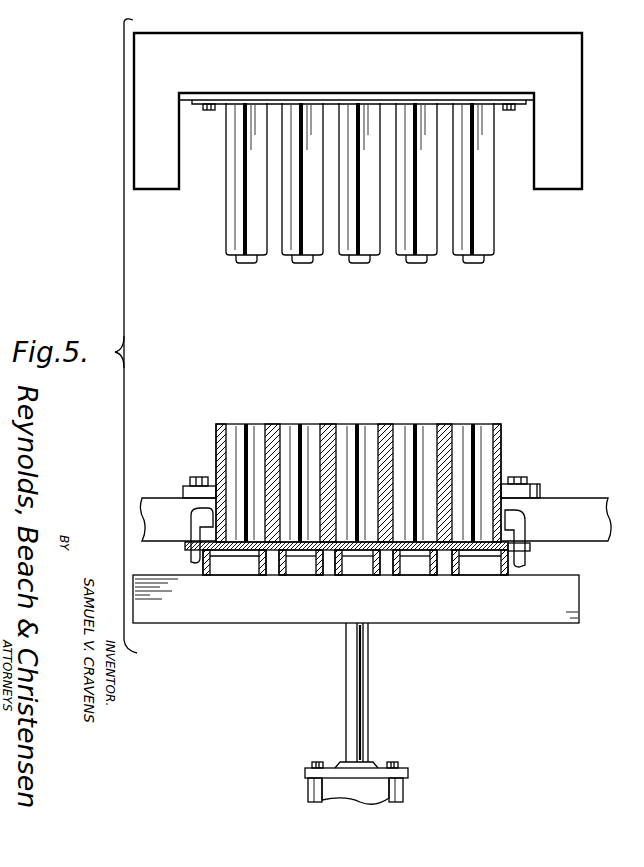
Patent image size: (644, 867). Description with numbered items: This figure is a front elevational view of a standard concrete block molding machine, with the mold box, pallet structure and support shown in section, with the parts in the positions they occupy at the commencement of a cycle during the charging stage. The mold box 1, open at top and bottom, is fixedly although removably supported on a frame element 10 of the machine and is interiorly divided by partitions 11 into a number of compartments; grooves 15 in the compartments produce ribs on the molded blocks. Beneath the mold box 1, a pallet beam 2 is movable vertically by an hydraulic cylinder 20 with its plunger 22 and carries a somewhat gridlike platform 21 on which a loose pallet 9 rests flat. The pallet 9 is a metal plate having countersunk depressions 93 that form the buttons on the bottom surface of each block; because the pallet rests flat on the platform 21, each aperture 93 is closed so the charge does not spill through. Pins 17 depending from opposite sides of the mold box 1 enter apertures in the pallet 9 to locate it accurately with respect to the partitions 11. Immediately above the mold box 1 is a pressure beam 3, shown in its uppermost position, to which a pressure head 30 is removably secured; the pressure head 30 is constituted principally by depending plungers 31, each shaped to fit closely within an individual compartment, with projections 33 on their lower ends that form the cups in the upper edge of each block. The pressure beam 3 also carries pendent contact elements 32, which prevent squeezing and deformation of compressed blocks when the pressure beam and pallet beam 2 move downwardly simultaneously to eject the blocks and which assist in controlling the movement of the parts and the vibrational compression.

The mold box 1 is at (377, 464).
The pallet beam 2 is at (420, 625).
The pressure beam 3 is at (408, 75).
The pallet 9 is at (187, 544).
The frame element 10 is at (574, 501).
The partitions 11 is at (385, 424).
The grooves 15 is at (415, 443).
The pins 17 is at (525, 561).
The hydraulic cylinder 20 is at (382, 791).
The platform 21 is at (204, 570).
The plunger 22 is at (360, 723).
The pressure head 30 is at (238, 101).
The plungers 31 is at (300, 213).
The pendent contact elements 32 is at (577, 163).
The projections 33 is at (298, 264).
The depressions 93 is at (385, 602).